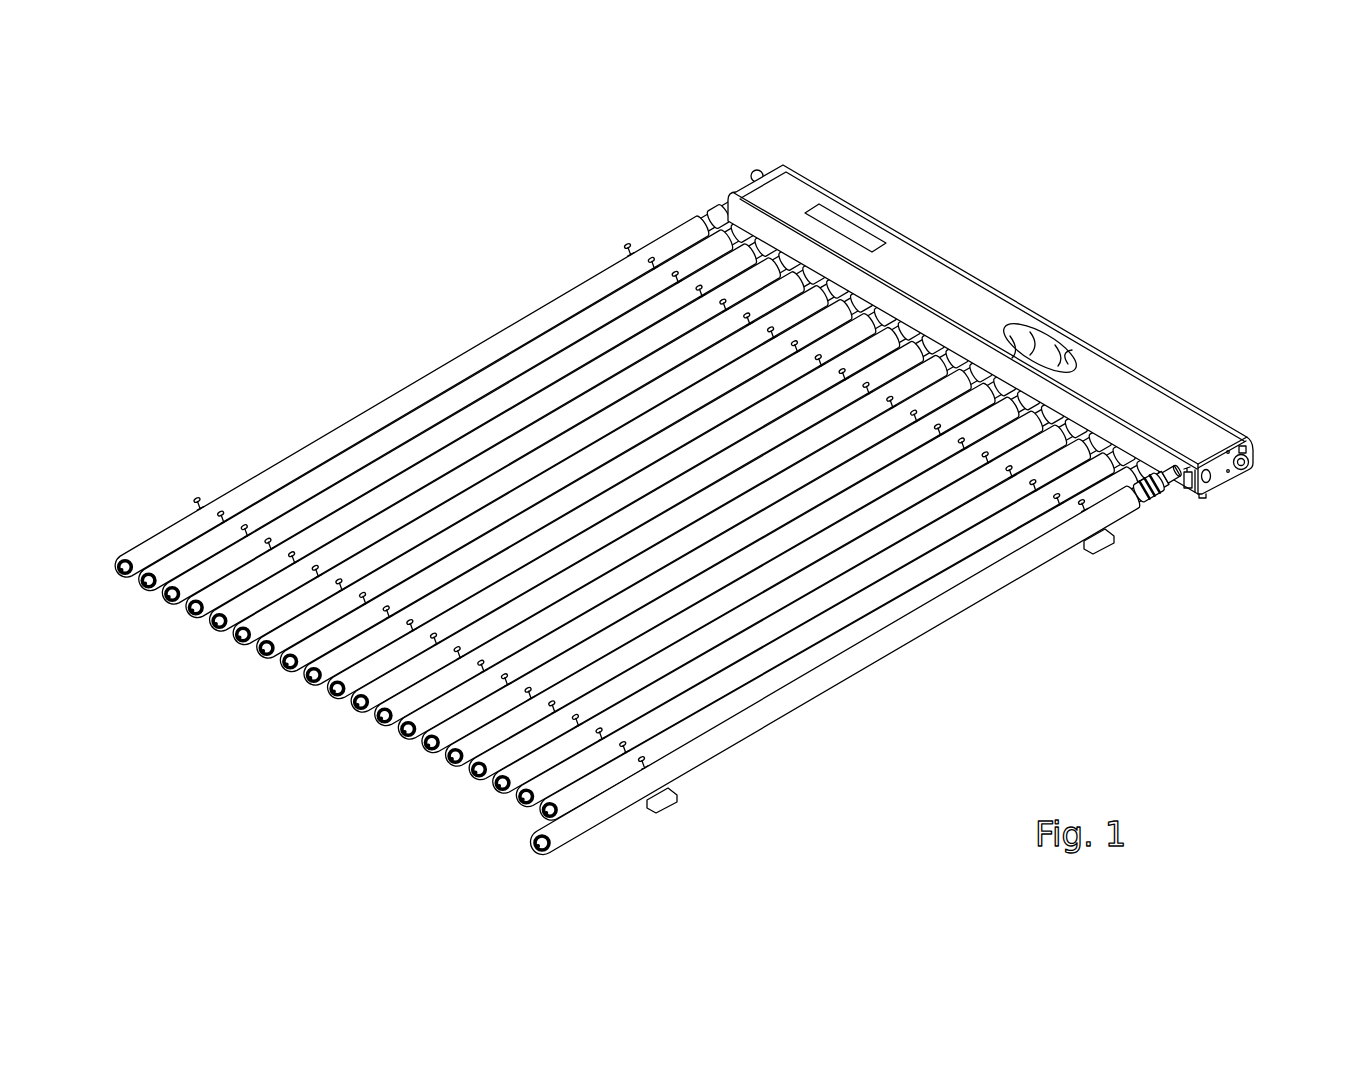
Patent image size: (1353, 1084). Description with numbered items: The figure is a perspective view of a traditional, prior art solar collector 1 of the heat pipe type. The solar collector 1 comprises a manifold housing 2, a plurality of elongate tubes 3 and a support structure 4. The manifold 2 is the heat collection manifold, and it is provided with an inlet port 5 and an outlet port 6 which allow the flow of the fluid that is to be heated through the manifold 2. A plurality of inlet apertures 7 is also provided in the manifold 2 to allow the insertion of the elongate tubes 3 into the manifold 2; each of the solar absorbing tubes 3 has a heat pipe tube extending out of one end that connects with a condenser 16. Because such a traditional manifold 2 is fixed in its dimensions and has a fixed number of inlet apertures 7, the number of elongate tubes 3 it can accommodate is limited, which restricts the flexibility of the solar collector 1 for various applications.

The solar collector 1 is at (358, 351).
The manifold housing 2 is at (935, 268).
The elongate tubes 3 is at (848, 673).
The support structure 4 is at (672, 781).
The inlet port 5 is at (749, 172).
The outlet port 6 is at (1250, 468).
The inlet apertures 7 is at (1190, 489).
The condenser 16 is at (1177, 484).